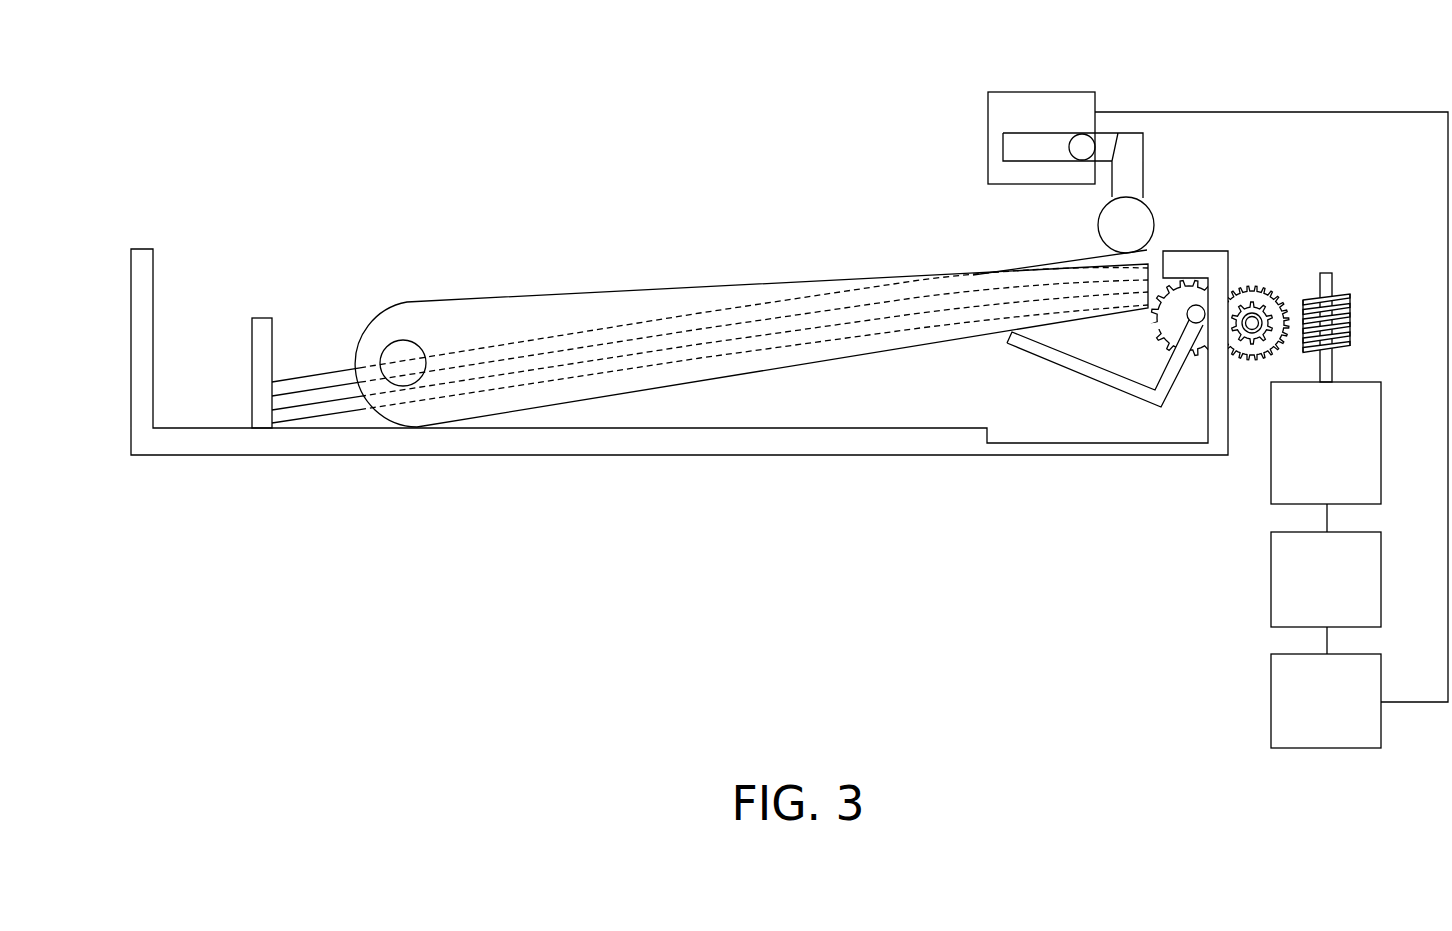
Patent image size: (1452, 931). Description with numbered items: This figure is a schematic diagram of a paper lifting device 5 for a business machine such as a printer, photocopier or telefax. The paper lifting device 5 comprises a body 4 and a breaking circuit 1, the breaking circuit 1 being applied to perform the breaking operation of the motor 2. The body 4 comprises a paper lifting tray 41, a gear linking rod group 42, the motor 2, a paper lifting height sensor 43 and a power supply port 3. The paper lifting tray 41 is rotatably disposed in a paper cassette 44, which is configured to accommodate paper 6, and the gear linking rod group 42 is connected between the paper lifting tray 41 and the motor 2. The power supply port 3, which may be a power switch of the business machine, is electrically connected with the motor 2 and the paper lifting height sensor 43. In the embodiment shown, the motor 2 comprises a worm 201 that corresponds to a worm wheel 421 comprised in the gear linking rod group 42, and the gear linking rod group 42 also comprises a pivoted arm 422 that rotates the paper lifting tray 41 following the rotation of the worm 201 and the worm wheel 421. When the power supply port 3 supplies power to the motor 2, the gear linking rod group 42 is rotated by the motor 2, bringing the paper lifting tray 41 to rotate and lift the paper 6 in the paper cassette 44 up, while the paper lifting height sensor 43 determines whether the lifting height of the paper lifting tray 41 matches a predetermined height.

The paper lifting device 5 is at (118, 80).
The body 4 is at (302, 213).
The paper lifting tray 41 is at (673, 288).
The gear linking rod group 42 is at (1247, 251).
The worm wheel 421 is at (1273, 277).
The pivoted arm 422 is at (1080, 363).
The worm 201 is at (1352, 335).
The paper lifting height sensor 43 is at (1072, 91).
The paper cassette 44 is at (630, 455).
The paper 6 is at (347, 413).
The motor 2 is at (1381, 418).
The breaking circuit 1 is at (1381, 554).
The power supply port 3 is at (1381, 673).